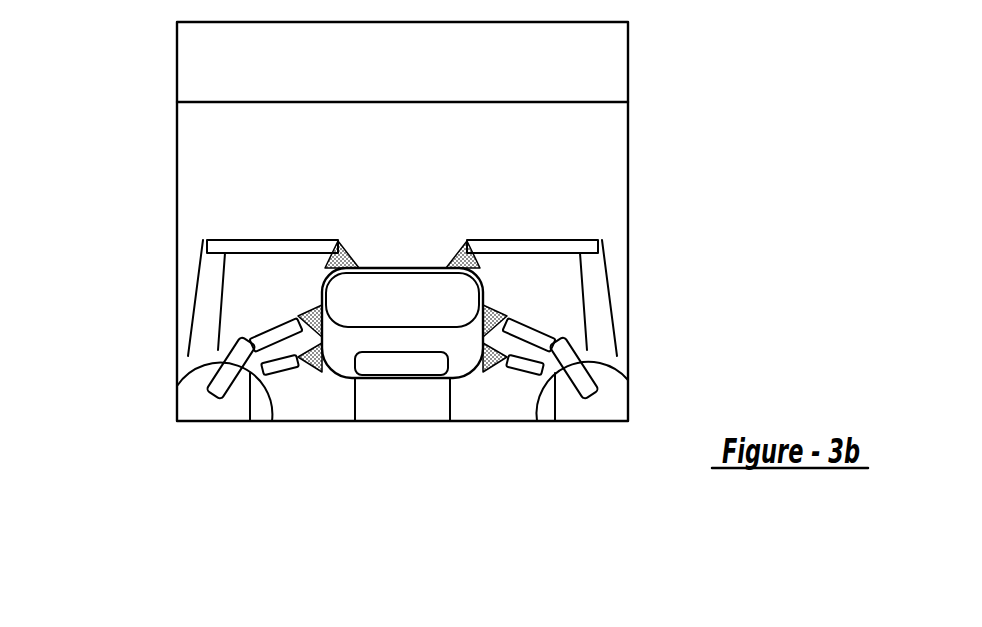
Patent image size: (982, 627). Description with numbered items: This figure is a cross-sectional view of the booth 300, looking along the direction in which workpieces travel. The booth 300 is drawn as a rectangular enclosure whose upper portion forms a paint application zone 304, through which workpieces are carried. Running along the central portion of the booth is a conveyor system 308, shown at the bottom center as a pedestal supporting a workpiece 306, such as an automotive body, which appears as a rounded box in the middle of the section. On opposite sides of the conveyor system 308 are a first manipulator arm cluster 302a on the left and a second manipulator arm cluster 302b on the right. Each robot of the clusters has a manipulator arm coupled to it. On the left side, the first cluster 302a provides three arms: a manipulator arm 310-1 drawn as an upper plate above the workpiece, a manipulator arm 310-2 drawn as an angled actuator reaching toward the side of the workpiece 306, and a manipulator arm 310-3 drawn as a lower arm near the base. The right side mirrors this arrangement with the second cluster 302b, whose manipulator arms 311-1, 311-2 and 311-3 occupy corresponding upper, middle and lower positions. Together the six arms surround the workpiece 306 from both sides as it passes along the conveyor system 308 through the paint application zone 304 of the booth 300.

The booth 300 is at (628, 59).
The first manipulator arm cluster 302a is at (198, 429).
The second manipulator arm cluster 302b is at (590, 427).
The paint application zone 304 is at (318, 148).
The workpiece 306 is at (413, 265).
The conveyor system 308 is at (400, 405).
The manipulator arm 310-1 is at (265, 248).
The manipulator arm 310-2 is at (242, 343).
The manipulator arm 310-3 is at (262, 385).
The manipulator arm 311-1 is at (497, 242).
The manipulator arm 311-2 is at (542, 330).
The manipulator arm 311-3 is at (520, 363).